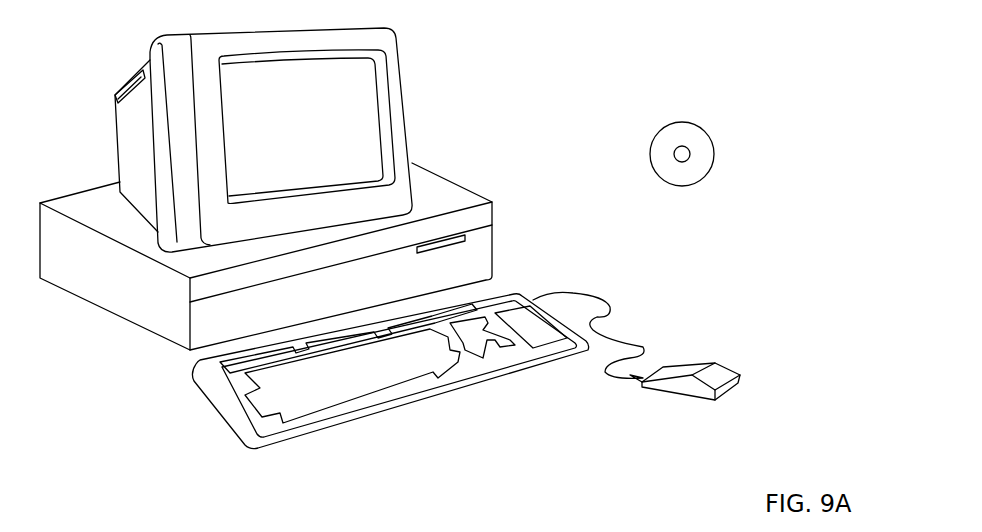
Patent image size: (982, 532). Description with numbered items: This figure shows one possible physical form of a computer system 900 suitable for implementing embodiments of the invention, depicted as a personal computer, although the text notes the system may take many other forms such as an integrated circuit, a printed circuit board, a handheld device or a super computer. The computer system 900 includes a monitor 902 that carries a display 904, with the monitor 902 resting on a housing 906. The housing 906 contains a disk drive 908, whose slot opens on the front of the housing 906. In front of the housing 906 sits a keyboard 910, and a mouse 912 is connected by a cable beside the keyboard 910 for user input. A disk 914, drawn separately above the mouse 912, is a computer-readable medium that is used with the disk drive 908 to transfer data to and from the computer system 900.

The computer system 900 is at (810, 42).
The monitor 902 is at (408, 137).
The display 904 is at (372, 88).
The housing 906 is at (143, 335).
The disk drive 908 is at (466, 233).
The keyboard 910 is at (380, 412).
The mouse 912 is at (730, 368).
The disk 914 is at (699, 125).